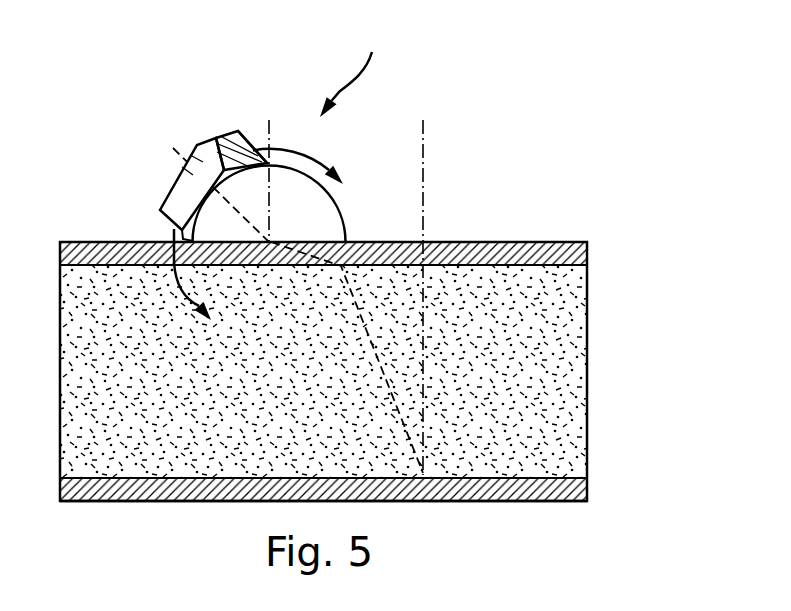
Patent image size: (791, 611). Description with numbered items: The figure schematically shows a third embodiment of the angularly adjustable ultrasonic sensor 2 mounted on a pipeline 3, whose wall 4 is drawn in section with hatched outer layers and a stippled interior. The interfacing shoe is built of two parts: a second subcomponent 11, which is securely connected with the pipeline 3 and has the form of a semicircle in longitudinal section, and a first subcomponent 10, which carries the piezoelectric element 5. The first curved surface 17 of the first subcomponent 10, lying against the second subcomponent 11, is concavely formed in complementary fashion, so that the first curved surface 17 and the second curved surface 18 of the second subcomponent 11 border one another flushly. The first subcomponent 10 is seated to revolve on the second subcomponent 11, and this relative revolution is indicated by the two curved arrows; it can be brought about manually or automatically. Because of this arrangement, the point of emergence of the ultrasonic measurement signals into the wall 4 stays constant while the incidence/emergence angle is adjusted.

The angularly adjustable ultrasonic sensor 2 is at (349, 72).
The pipeline 3 is at (522, 492).
The test object 4 is at (568, 363).
The piezoelectric element 5 is at (197, 144).
The first subcomponent 10 is at (236, 156).
The first curved surface 17 is at (252, 147).
The second subcomponent 11 is at (338, 207).
The second curved surface 18 is at (298, 166).